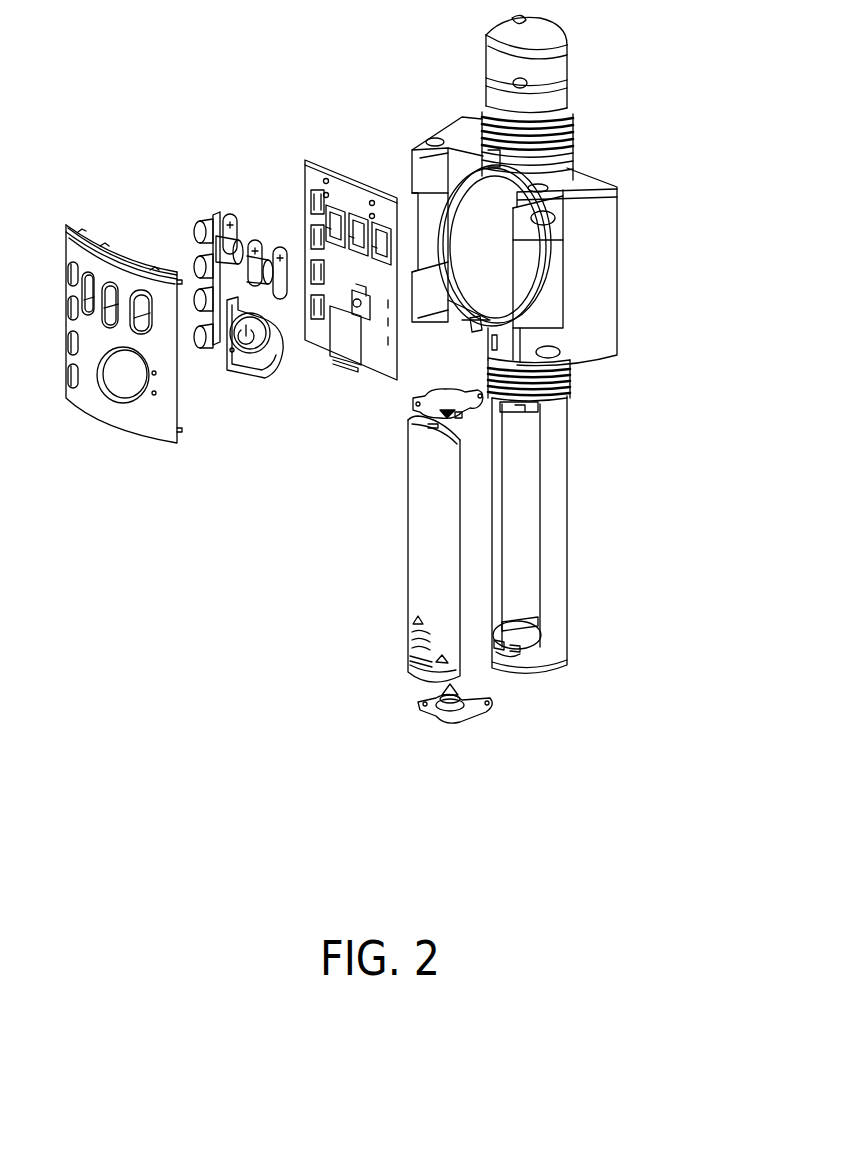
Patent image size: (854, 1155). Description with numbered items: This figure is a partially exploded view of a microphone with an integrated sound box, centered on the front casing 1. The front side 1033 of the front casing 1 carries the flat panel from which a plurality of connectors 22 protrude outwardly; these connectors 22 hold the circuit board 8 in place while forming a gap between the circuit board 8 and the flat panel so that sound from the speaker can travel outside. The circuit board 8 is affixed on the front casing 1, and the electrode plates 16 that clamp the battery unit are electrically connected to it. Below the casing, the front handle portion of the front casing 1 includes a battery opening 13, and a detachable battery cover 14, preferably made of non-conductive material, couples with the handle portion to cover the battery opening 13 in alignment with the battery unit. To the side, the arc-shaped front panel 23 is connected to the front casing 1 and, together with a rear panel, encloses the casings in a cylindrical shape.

The front casing 1 is at (455, 214).
The circuit board 8 is at (310, 178).
The battery opening 13 is at (523, 527).
The battery cover 14 is at (425, 570).
The electrode plates 16 is at (417, 402).
The connectors 22 is at (548, 224).
The arc-shaped front panel 23 is at (137, 423).
The front side 1033 is at (427, 203).